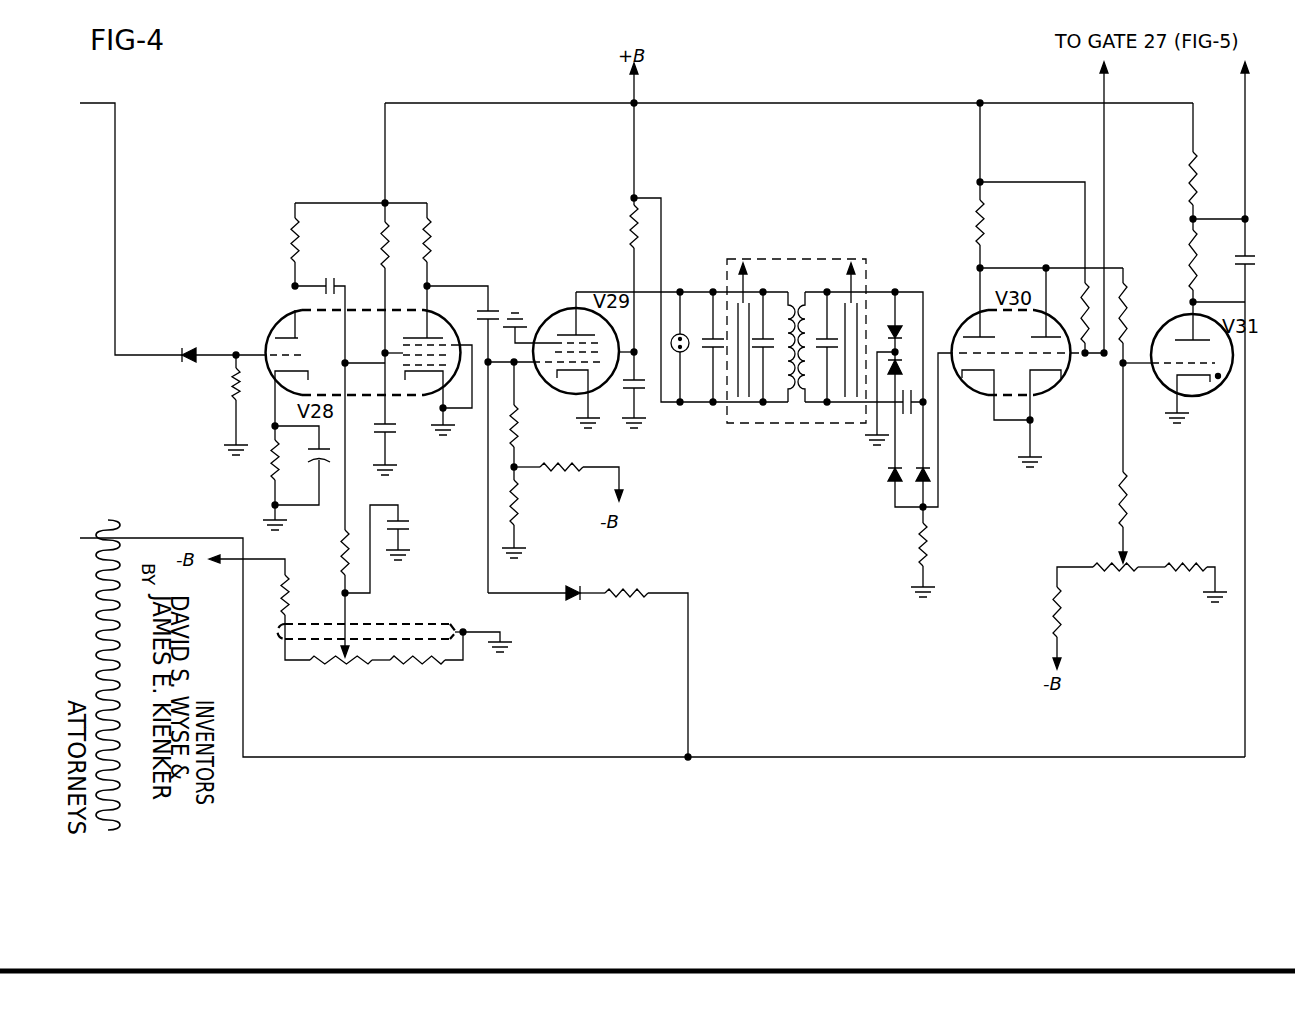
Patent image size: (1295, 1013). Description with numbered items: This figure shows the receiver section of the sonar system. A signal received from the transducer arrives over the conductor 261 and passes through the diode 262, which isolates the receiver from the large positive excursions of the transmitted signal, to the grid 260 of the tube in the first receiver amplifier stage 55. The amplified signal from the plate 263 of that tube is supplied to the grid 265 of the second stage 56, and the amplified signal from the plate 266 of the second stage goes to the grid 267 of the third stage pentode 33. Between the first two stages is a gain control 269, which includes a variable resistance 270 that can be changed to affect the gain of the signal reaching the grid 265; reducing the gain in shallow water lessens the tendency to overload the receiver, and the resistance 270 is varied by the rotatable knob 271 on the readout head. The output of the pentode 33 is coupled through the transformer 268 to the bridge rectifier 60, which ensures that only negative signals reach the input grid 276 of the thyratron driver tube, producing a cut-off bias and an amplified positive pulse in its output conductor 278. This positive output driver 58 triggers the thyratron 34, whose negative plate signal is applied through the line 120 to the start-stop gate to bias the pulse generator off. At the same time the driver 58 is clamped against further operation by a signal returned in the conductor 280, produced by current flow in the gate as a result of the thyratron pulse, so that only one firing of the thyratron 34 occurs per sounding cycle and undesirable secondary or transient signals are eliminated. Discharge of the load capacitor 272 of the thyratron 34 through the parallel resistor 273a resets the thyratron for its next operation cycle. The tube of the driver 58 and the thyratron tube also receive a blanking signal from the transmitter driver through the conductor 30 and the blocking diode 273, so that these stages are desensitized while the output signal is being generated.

The conductor 261 is at (116, 154).
The diode 262 is at (188, 347).
The plate 263 is at (282, 335).
The grid 260 is at (307, 356).
The grid 265 is at (404, 358).
The plate 266 is at (438, 330).
The grid 267 is at (560, 362).
The first receiver amplifier stage 55 is at (263, 389).
The second stage 56 is at (433, 406).
The third stage pentode 33 is at (554, 391).
The transformer 268 is at (791, 421).
The bridge rectifier 60 is at (869, 441).
The input grid 276 is at (965, 353).
The output conductor 278 is at (1117, 269).
The conductor 280 is at (1104, 86).
The line 120 is at (1245, 86).
The parallel resistor 273a is at (1192, 260).
The load capacitor 272 is at (1256, 268).
The positive output driver 58 is at (1057, 388).
The thyratron 34 is at (1222, 398).
The rotatable knob 271 is at (353, 632).
The variable resistance 270 is at (322, 666).
The gain control 269 is at (364, 671).
The blocking diode 273 is at (572, 585).
The conductor 30 is at (125, 538).